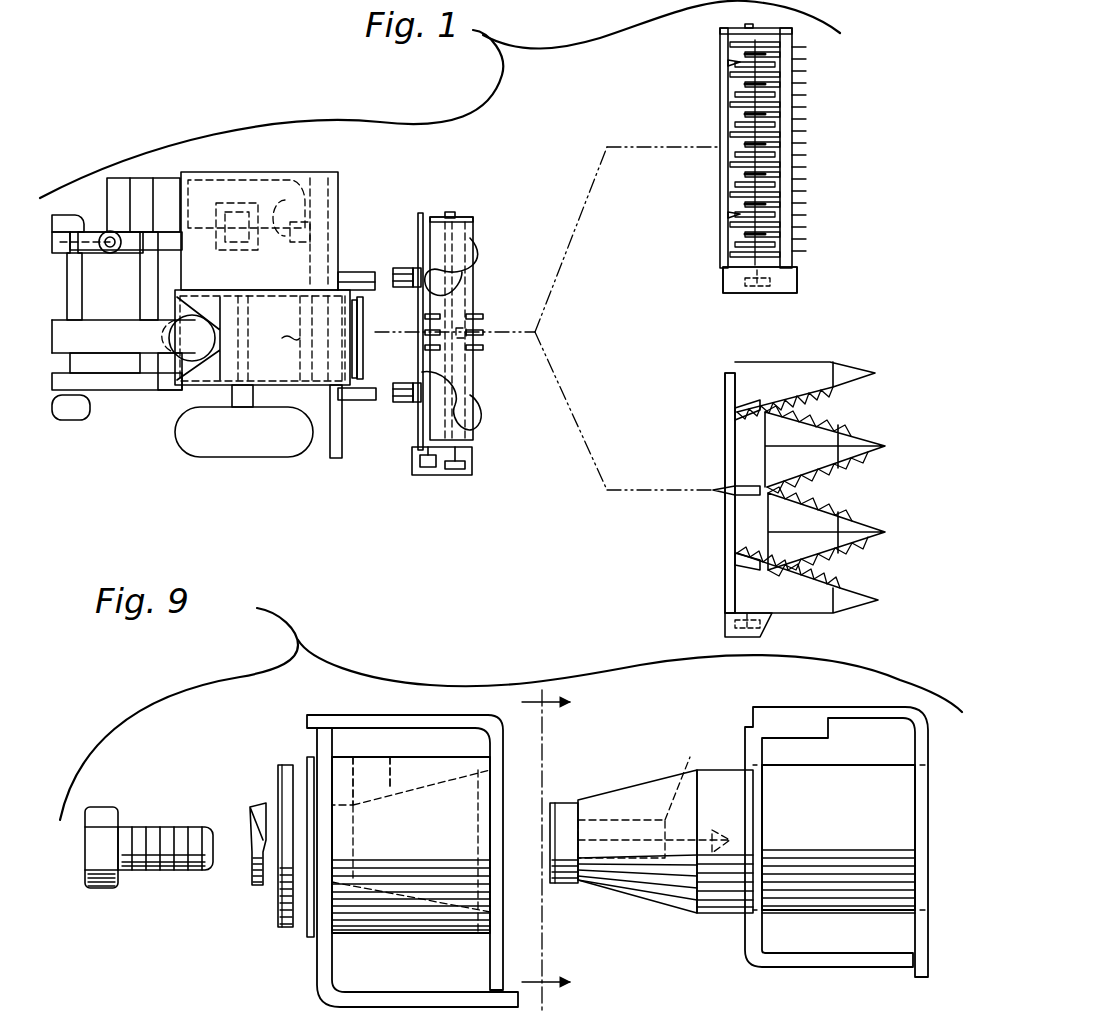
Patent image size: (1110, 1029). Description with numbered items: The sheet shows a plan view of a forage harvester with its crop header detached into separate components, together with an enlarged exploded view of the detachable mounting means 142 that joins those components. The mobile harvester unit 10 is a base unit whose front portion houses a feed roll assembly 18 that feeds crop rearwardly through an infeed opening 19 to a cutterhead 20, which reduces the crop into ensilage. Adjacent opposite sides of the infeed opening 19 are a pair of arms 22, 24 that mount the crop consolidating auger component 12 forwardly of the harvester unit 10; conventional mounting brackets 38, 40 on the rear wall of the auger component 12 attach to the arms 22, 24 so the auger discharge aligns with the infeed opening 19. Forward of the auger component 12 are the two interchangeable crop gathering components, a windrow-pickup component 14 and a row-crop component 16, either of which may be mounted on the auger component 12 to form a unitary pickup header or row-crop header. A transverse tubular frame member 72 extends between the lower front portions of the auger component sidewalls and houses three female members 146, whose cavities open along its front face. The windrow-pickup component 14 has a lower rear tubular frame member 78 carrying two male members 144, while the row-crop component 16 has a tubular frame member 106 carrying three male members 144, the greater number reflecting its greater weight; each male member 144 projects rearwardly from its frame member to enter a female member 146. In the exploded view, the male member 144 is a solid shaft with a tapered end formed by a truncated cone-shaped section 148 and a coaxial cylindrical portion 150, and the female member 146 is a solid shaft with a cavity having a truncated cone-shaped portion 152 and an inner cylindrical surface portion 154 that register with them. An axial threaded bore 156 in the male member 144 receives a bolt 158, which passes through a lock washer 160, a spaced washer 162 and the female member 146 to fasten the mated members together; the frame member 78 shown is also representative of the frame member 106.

In FIG. 1, the mobile harvester unit 10 is at (347, 180).
In FIG. 9, the mobile harvester unit 10 is at (537, 859).
In FIG. 1, the crop consolidating auger component 12 is at (479, 298).
In FIG. 1, the windrow-pickup component 14 is at (812, 135).
In FIG. 1, the row-crop component 16 is at (868, 424).
In FIG. 1, the feed roll assembly 18 is at (358, 318).
In FIG. 1, the infeed opening 19 is at (366, 349).
In FIG. 1, the cutterhead 20 is at (276, 335).
In FIG. 1, the arm 22 is at (372, 400).
In FIG. 1, the arm 24 is at (380, 255).
In FIG. 1, the mounting bracket 38 is at (400, 402).
In FIG. 1, the mounting bracket 40 is at (397, 268).
In FIG. 1, the transverse tubular frame member 72 is at (472, 440).
In FIG. 9, the transverse tubular frame member 72 is at (385, 715).
In FIG. 1, the tubular frame member 78 is at (720, 258).
In FIG. 9, the tubular frame member 78 is at (870, 707).
In FIG. 1, the tubular frame member 106 is at (725, 373).
In FIG. 9, the detachable mounting means 142 is at (443, 642).
In FIG. 1, the male member 144 is at (720, 63).
In FIG. 9, the male member 144 is at (847, 913).
In FIG. 1, the female member 146 is at (470, 237).
In FIG. 9, the female member 146 is at (372, 933).
In FIG. 9, the truncated cone-shaped section 148 is at (635, 800).
In FIG. 9, the cylindrical portion 150 is at (562, 803).
In FIG. 9, the truncated cone-shaped portion 152 is at (420, 765).
In FIG. 9, the inner cylindrical surface portion 154 is at (346, 765).
In FIG. 9, the axial threaded bore 156 is at (699, 783).
In FIG. 9, the bolt 158 is at (140, 827).
In FIG. 9, the lock washer 160 is at (262, 776).
In FIG. 9, the spaced washer 162 is at (288, 765).